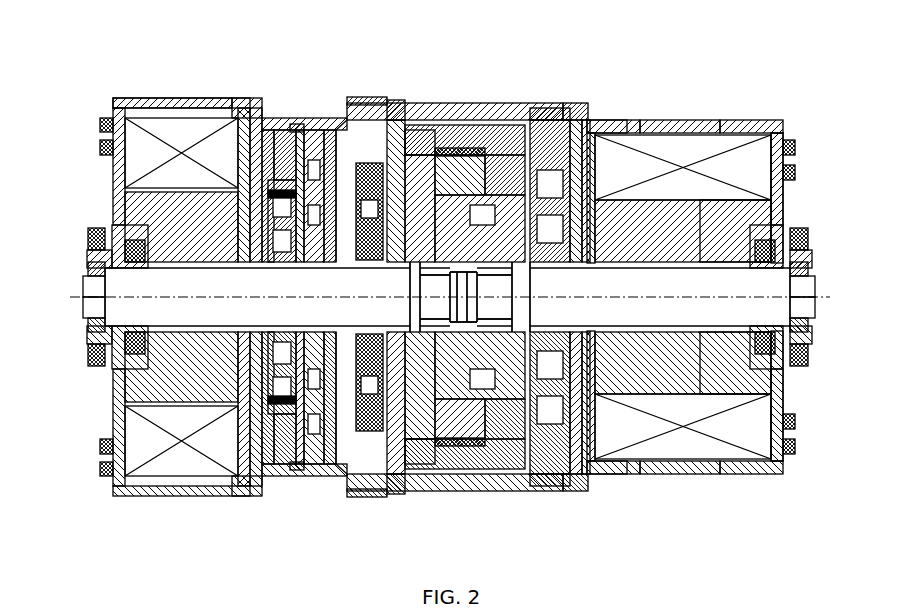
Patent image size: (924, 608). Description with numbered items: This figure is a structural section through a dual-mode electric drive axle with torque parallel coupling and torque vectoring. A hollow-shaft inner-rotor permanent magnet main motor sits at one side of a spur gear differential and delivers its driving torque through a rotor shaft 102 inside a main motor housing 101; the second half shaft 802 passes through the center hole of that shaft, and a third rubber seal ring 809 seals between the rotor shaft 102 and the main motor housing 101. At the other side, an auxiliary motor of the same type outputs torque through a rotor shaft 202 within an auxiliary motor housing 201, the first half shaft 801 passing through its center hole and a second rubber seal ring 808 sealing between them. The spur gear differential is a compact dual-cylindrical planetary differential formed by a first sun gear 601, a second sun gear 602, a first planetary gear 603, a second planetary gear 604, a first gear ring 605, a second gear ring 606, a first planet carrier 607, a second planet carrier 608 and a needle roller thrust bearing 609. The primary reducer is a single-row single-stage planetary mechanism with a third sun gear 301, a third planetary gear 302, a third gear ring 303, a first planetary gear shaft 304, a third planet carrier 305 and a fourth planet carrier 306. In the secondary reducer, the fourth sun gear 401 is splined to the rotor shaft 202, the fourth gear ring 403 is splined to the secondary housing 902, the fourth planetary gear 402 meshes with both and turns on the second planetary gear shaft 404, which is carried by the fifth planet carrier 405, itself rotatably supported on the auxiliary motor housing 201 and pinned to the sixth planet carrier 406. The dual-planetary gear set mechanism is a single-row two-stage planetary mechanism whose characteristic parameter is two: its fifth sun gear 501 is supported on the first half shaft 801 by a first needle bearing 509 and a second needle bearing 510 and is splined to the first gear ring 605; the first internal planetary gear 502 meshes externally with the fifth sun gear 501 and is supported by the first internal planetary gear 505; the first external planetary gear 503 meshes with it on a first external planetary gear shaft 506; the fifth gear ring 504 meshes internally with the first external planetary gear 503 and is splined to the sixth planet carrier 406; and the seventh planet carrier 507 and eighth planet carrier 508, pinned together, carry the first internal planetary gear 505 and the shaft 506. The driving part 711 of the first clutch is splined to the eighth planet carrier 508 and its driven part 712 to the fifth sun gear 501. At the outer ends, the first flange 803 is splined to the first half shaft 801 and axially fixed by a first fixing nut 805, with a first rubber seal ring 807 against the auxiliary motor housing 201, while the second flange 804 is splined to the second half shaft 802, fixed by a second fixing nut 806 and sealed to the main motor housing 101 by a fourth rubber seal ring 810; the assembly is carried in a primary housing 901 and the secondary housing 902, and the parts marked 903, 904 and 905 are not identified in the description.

The main motor housing 101 is at (795, 165).
The rotor shaft 102 is at (790, 195).
The auxiliary motor housing 201 is at (100, 135).
The rotor shaft 202 is at (200, 220).
The third sun gear 301 is at (690, 160).
The third planetary gear 302 is at (650, 185).
The third gear ring 303 is at (598, 470).
The first planetary gear shaft 304 is at (615, 195).
The third planet carrier 305 is at (700, 475).
The fourth planet carrier 306 is at (740, 478).
The fourth sun gear 401 is at (232, 187).
The fourth planetary gear 402 is at (253, 467).
The fourth gear ring 403 is at (263, 472).
The second planetary gear shaft 404 is at (177, 493).
The fifth planet carrier 405 is at (250, 200).
The sixth planet carrier 406 is at (268, 215).
The fifth sun gear 501 is at (400, 110).
The first internal planetary gear 502 is at (310, 118).
The first external planetary gear 503 is at (316, 122).
The fifth gear ring 504 is at (320, 467).
The first internal planetary gear 505 is at (285, 175).
The first external planetary gear shaft 506 is at (296, 130).
The seventh planet carrier 507 is at (293, 470).
The eighth planet carrier 508 is at (370, 100).
The first needle bearing 509 is at (397, 467).
The second needle bearing 510 is at (537, 480).
The first sun gear 601 is at (556, 170).
The second sun gear 602 is at (590, 150).
The first planetary gear 603 is at (498, 190).
The second planetary gear 604 is at (520, 130).
The first gear ring 605 is at (430, 165).
The second gear ring 606 is at (465, 185).
The first planet carrier 607 is at (493, 470).
The second planet carrier 608 is at (665, 478).
The needle roller thrust bearing 609 is at (580, 140).
The driving part 711 is at (418, 455).
The driven part 712 is at (455, 440).
The first half shaft 801 is at (110, 385).
The second half shaft 802 is at (785, 390).
The first flange 803 is at (100, 355).
The second flange 804 is at (790, 350).
The first fixing nut 805 is at (95, 330).
The second fixing nut 806 is at (805, 315).
The first rubber seal ring 807 is at (100, 270).
The second rubber seal ring 808 is at (95, 238).
The third rubber seal ring 809 is at (810, 268).
The fourth rubber seal ring 810 is at (800, 242).
The primary housing 901 is at (573, 478).
The secondary housing 902 is at (353, 493).
The third fastening bolt 903 is at (245, 480).
The fourth fastening bolt 904 is at (378, 490).
The fifth fastening bolt 905 is at (630, 475).